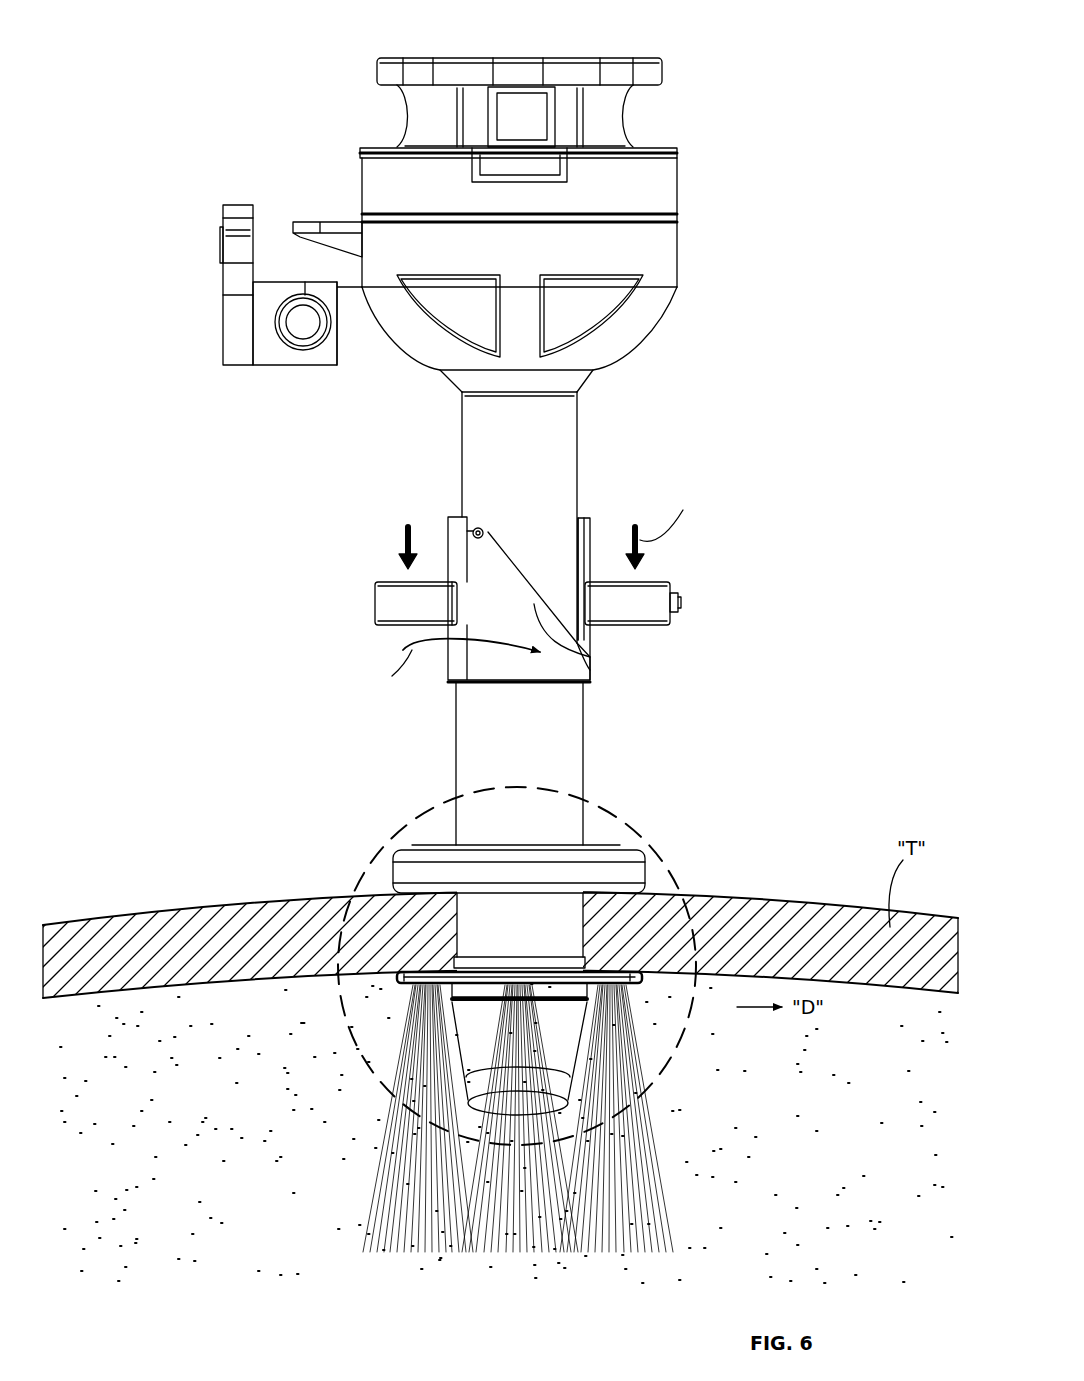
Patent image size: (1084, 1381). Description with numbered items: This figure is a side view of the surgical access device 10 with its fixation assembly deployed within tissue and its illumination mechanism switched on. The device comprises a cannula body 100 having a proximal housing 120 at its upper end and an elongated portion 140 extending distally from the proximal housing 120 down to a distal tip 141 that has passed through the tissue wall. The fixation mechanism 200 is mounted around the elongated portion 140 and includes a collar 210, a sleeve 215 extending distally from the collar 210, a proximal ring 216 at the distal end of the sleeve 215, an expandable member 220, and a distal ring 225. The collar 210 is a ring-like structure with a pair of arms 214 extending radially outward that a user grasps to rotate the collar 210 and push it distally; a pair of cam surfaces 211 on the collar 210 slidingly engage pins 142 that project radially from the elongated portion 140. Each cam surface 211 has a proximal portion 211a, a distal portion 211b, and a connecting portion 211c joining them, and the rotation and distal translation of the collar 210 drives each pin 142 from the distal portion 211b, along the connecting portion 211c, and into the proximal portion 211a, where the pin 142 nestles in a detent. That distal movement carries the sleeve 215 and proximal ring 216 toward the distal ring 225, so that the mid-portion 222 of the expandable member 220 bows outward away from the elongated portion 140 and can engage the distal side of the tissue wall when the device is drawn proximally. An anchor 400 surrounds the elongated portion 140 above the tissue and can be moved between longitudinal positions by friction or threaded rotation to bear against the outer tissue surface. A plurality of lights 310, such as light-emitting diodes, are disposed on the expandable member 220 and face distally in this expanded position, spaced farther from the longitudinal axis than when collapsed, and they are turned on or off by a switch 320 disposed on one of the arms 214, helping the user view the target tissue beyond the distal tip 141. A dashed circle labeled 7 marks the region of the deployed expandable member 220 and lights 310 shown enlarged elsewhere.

The surgical access device 10 is at (247, 65).
The cannula body 100 is at (198, 325).
The proximal housing 120 is at (668, 246).
The elongated portion 140 is at (553, 423).
The pin 142 is at (481, 528).
The fixation mechanism 200 is at (368, 632).
The collar 210 is at (457, 530).
The cam surface 211 is at (520, 560).
The proximal portion 211a is at (488, 535).
The distal portion 211b is at (585, 645).
The connecting portion 211c is at (590, 683).
The arm 214 is at (633, 610).
The sleeve 215 is at (473, 772).
The proximal ring 216 is at (465, 975).
The expandable member 220 is at (637, 977).
The mid-portion 222 is at (640, 977).
The distal ring 225 is at (480, 990).
The light 310 is at (410, 983).
The switch 320 is at (678, 603).
The anchor 400 is at (610, 847).
The distal tip 141 is at (560, 1083).
The detail view circle 7 is at (655, 845).